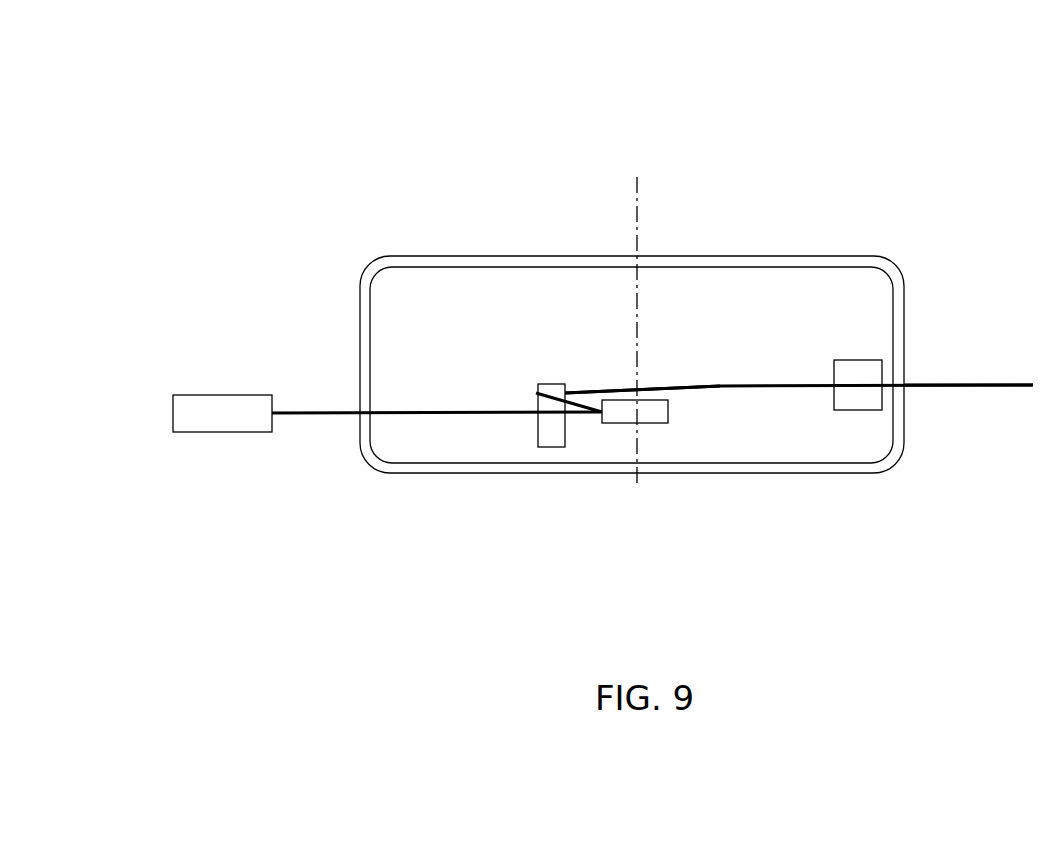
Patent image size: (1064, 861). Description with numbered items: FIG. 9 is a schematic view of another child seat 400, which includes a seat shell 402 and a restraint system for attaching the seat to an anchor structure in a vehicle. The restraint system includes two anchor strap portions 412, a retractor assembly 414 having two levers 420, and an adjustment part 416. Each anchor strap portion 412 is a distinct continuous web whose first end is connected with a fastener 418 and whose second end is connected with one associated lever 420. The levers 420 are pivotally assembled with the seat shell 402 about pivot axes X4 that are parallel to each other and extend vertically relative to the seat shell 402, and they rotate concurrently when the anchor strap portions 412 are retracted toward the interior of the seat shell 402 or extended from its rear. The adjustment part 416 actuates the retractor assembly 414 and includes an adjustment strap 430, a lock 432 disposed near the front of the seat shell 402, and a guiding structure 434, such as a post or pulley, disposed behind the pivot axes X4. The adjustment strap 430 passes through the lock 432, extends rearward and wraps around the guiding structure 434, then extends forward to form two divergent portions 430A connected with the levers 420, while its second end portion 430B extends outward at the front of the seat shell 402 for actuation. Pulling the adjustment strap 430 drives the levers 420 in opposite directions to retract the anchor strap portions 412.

The child seat 400 is at (80, 66).
The seat shell 402 is at (748, 257).
The pivot axis X4 is at (637, 200).
The anchor strap portion 412 is at (305, 410).
The retractor assembly 414 is at (583, 436).
The adjustment part 416 is at (922, 395).
The fastener 418 is at (220, 410).
The lever 420 is at (668, 412).
The adjustment strap 430 is at (760, 388).
The divergent portion 430A is at (576, 395).
The second end portion 430B is at (966, 366).
The lock 432 is at (860, 410).
The guiding structure 434 is at (548, 447).